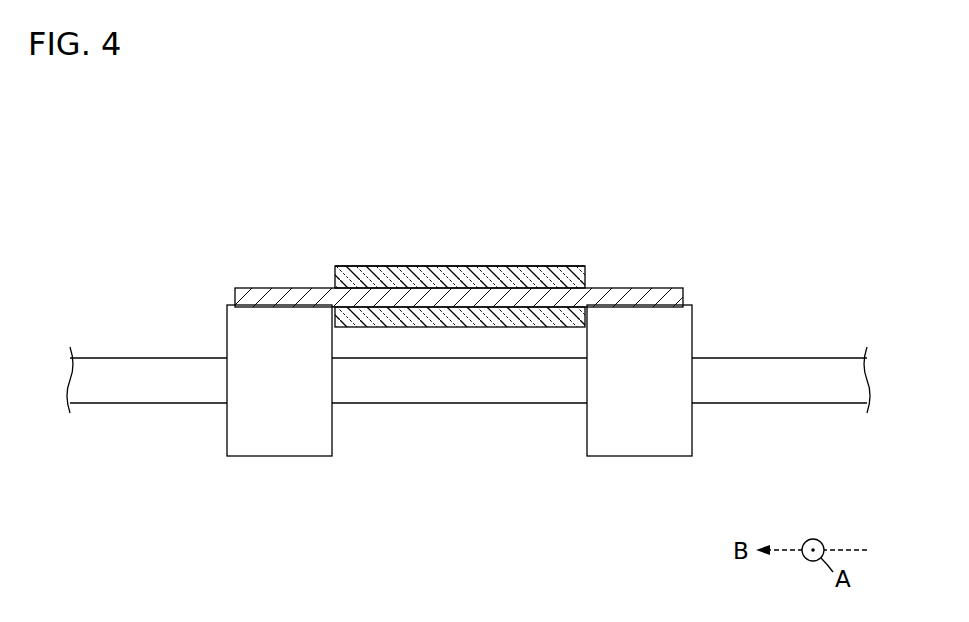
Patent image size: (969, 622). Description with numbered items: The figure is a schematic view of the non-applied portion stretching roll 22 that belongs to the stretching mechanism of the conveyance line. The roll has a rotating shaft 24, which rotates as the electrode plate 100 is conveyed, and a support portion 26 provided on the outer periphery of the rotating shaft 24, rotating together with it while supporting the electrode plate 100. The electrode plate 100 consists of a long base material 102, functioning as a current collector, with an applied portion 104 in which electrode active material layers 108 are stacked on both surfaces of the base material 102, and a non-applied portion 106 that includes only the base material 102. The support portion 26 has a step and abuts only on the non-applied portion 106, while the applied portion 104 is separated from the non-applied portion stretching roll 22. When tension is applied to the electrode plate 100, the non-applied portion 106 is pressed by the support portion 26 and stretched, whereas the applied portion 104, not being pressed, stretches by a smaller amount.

The non-applied portion stretching roll 22 is at (826, 414).
The rotating shaft 24 is at (735, 405).
The support portion 26 is at (613, 445).
The electrode plate 100 is at (464, 232).
The base material 102 is at (683, 298).
The applied portion 104 is at (583, 266).
The non-applied portion 106 is at (235, 288).
The electrode active material layer 108 is at (357, 265).